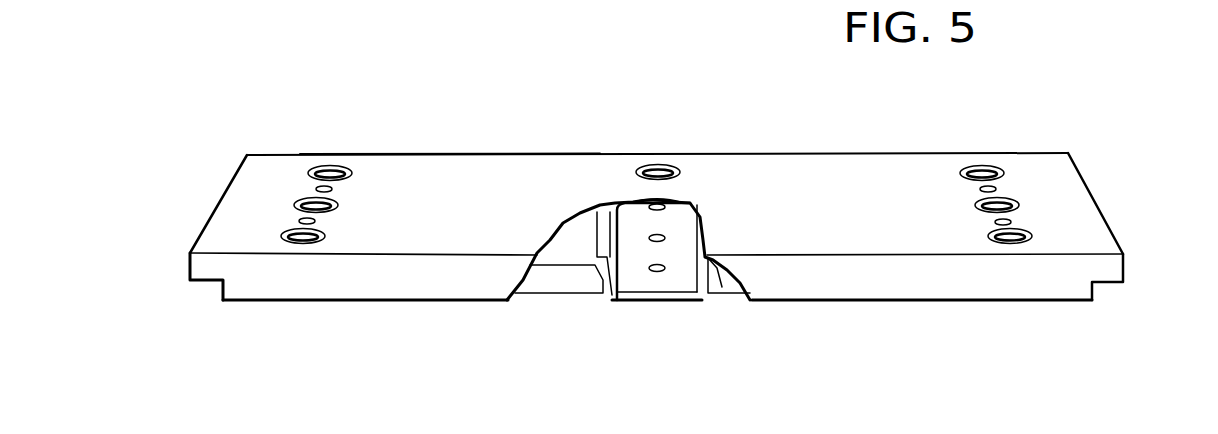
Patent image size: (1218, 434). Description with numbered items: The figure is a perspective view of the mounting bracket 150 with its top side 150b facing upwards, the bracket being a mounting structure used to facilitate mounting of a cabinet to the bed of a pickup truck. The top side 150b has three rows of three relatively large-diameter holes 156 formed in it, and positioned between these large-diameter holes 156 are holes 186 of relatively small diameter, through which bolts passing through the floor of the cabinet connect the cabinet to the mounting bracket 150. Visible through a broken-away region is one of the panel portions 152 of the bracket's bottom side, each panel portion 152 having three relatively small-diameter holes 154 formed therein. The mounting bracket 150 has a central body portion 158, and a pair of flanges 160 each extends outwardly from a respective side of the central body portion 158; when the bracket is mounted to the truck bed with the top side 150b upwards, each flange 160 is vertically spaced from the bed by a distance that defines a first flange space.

The mounting bracket 150 is at (192, 190).
The top side 150b is at (520, 173).
The panel portion 152 is at (680, 221).
The small-diameter hole 154 is at (655, 270).
The large-diameter hole 156 is at (339, 168).
The central body portion 158 is at (340, 285).
The flange 160 is at (201, 264).
The hole 186 is at (333, 190).